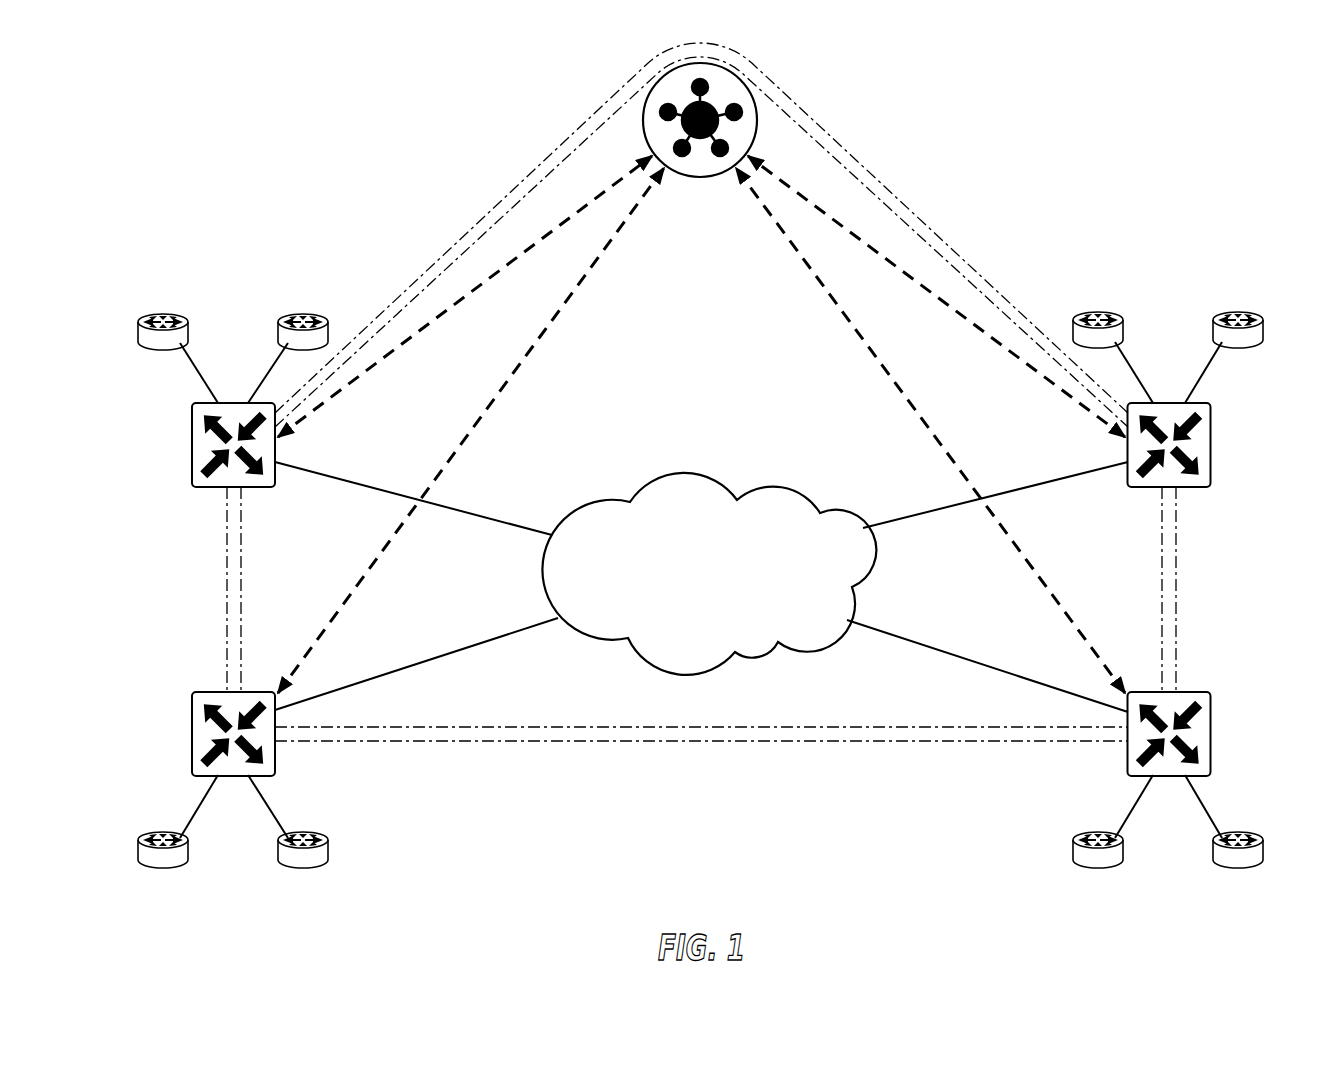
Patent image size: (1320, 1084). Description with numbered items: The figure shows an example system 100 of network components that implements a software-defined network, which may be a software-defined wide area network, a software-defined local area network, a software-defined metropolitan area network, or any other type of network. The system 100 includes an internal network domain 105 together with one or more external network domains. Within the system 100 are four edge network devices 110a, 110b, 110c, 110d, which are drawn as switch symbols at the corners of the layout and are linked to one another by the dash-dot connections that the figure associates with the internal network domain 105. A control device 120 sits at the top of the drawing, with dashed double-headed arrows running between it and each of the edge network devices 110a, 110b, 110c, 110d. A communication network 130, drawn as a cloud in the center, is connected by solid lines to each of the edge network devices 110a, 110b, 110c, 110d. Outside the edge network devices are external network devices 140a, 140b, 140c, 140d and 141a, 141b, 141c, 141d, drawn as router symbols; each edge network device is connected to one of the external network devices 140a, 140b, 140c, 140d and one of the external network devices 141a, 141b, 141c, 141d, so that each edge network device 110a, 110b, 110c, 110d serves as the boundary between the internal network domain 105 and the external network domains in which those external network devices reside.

The system 100 is at (1217, 108).
The internal network domain 105 is at (925, 222).
The edge network device 110a is at (192, 445).
The edge network device 110b is at (192, 734).
The edge network device 110c is at (1210, 445).
The edge network device 110d is at (1210, 734).
The control device 120 is at (757, 118).
The communication network 130 is at (717, 588).
The external network device 140a is at (160, 315).
The external network device 140b is at (160, 863).
The external network device 140c is at (1100, 313).
The external network device 140d is at (1100, 863).
The external network device 141a is at (300, 315).
The external network device 141b is at (300, 863).
The external network device 141c is at (1240, 313).
The external network device 141d is at (1240, 863).